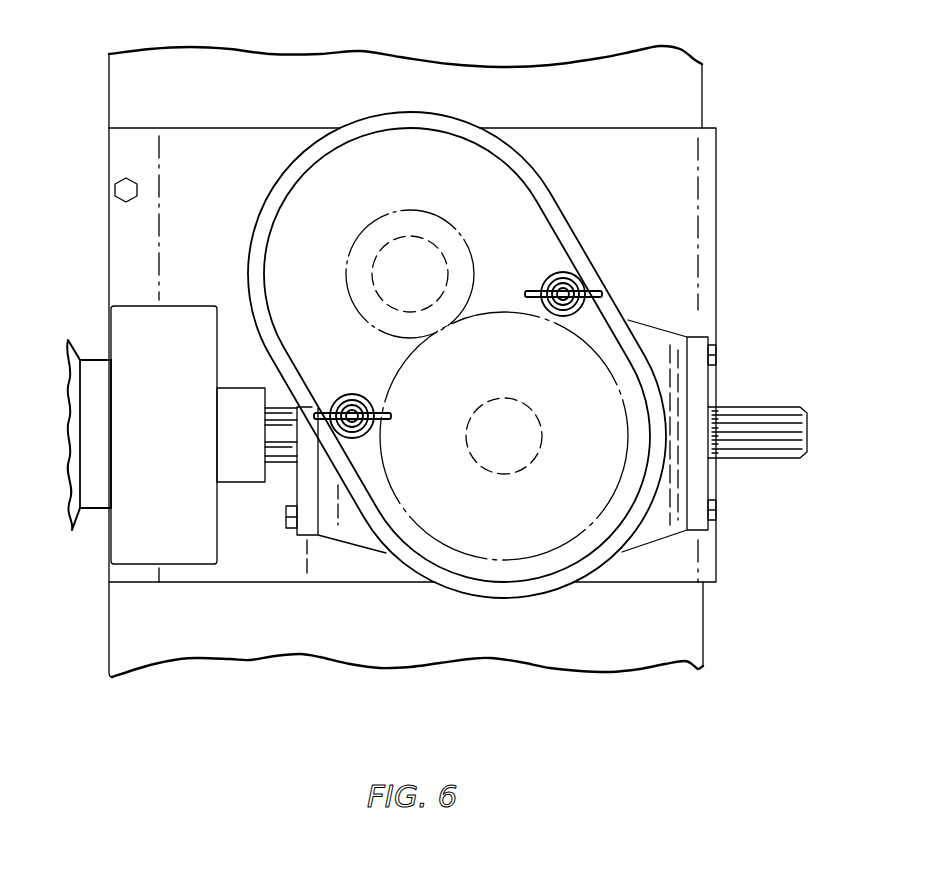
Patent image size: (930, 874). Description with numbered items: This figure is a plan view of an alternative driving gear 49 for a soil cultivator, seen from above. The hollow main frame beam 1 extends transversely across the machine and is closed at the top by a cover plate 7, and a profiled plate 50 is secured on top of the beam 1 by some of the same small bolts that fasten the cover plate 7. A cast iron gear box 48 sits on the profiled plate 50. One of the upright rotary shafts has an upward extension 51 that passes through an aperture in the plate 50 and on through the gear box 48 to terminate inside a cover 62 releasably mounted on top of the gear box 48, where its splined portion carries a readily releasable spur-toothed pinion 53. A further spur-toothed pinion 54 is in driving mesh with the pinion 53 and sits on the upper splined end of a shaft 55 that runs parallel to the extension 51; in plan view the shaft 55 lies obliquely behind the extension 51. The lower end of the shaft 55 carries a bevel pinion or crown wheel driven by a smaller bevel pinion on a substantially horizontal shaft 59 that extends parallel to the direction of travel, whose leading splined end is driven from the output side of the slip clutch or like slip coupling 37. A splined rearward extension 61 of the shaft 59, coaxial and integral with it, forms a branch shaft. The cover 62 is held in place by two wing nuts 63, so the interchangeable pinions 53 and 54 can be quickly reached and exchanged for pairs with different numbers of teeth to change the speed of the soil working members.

The hollow main frame beam 1 is at (367, 45).
The cover plate 7 is at (617, 66).
The slip clutch or like slip coupling 37 is at (150, 312).
The cast iron gear box 48 is at (640, 545).
The driving gear 49 is at (368, 552).
The profiled plate 50 is at (200, 136).
The upward extension 51 is at (390, 268).
The spur-toothed pinion 53 is at (456, 235).
The further spur-toothed pinion 54 is at (492, 555).
The shaft 55 is at (470, 455).
The substantially horizontal shaft 59 is at (290, 464).
The splined rearward extension or branch shaft 61 is at (780, 408).
The cover 62 is at (520, 200).
The wing nuts 63 is at (600, 293).